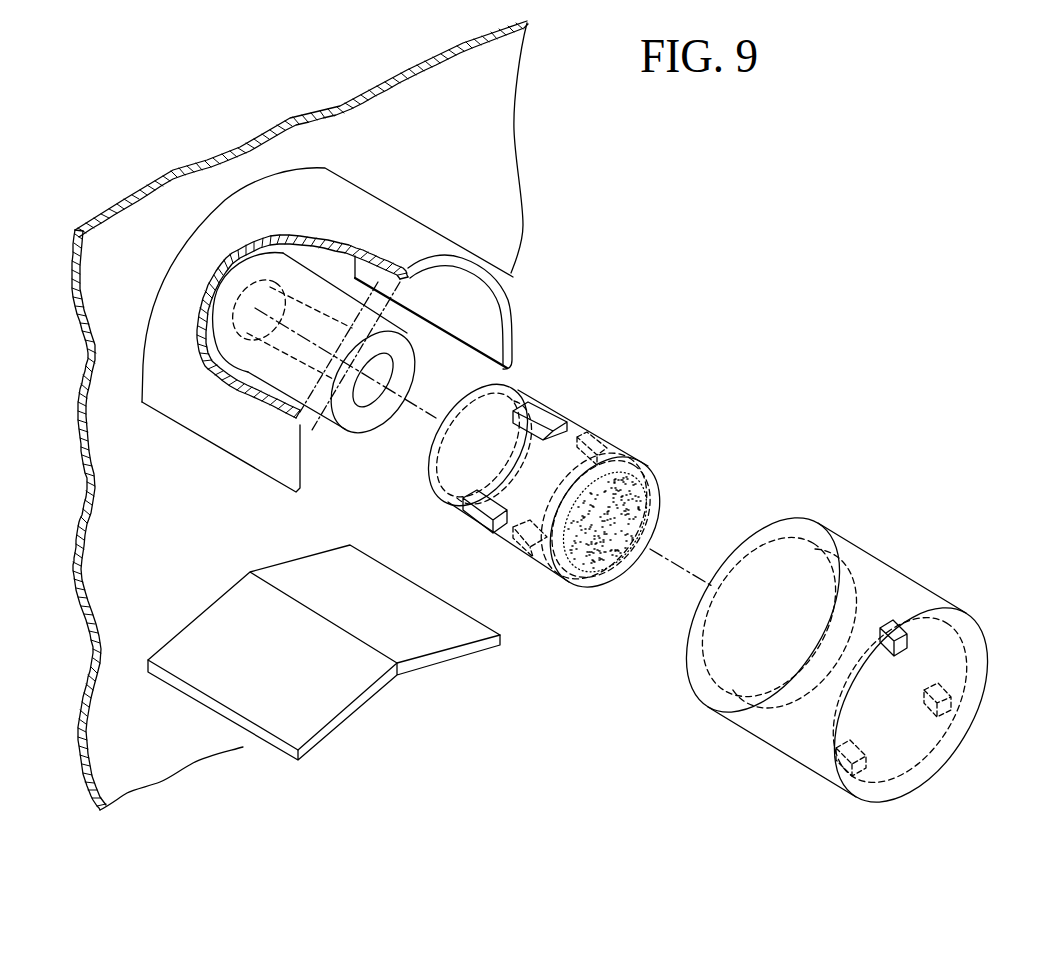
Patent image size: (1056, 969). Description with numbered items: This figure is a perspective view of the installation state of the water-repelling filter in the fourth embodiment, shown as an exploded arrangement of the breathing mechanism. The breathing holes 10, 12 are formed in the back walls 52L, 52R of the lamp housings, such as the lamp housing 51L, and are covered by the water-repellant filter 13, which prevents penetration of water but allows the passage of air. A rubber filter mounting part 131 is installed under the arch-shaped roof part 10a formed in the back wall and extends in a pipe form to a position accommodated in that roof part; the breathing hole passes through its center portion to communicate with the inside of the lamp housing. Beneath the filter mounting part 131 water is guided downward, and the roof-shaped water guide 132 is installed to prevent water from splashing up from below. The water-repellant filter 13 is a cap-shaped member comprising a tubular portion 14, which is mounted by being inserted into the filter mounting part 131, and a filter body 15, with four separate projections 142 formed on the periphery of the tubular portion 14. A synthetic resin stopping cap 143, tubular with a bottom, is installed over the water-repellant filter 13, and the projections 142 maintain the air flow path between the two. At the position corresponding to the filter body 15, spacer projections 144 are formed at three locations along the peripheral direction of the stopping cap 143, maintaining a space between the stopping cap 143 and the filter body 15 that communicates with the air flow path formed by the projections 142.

The back wall 52L is at (291, 415).
The back wall 52R is at (291, 415).
The lamp housing 51L is at (118, 248).
The breathing hole 10 is at (388, 307).
The arch-shaped roof part 10a is at (392, 223).
The breathing hole 12 is at (388, 307).
The filter mounting part 131 is at (317, 297).
The water guide 132 is at (210, 630).
The tubular portion 14 is at (528, 490).
The filter body 15 is at (617, 572).
The projections 142 is at (550, 400).
The water-repellant filter 13 is at (850, 620).
The stopping cap 143 is at (851, 550).
The spacer projections 144 is at (890, 627).